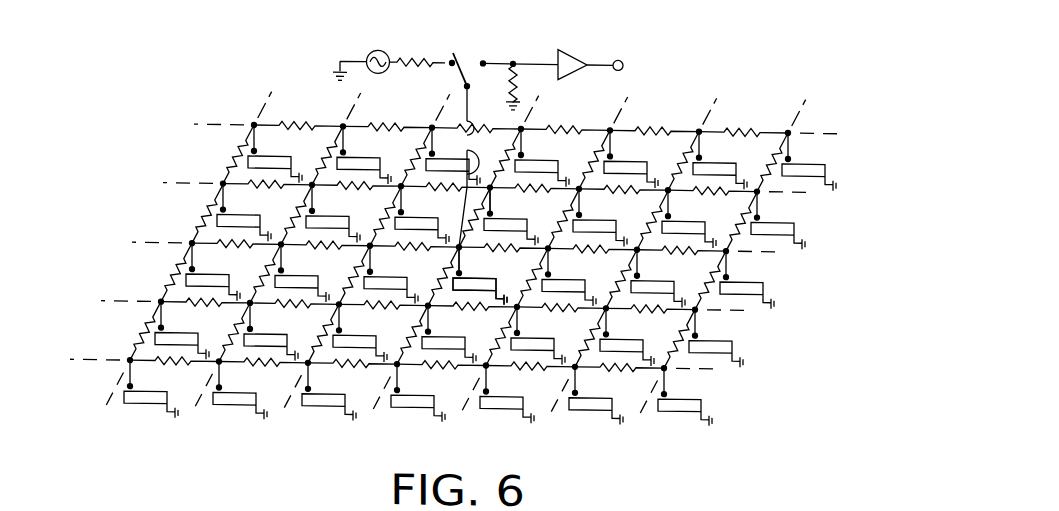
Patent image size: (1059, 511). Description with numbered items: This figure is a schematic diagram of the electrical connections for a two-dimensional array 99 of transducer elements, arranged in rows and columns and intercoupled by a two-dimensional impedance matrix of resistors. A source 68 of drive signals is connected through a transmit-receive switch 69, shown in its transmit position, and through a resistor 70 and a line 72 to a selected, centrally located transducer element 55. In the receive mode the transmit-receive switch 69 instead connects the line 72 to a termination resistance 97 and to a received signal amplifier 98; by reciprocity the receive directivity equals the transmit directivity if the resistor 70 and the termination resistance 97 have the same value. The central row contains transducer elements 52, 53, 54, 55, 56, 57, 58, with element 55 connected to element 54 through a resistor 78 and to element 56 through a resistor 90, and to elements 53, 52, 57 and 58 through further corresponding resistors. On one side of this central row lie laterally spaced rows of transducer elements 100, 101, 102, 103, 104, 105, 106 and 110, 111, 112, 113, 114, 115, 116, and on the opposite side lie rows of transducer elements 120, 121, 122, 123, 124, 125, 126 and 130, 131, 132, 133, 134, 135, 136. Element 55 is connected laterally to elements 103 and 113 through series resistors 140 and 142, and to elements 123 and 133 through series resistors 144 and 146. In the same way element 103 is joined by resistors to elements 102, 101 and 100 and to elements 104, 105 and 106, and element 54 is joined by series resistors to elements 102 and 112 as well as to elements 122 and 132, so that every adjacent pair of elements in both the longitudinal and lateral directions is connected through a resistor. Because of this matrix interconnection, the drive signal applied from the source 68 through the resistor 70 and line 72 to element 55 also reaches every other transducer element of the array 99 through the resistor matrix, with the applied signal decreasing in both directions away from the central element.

The transducer element 52 is at (222, 276).
The transducer element 53 is at (304, 276).
The transducer element 54 is at (372, 276).
The transducer element 55 is at (487, 282).
The transducer element 56 is at (551, 275).
The transducer element 57 is at (660, 276).
The transducer element 58 is at (765, 277).
The source of drive signals 68 is at (378, 48).
The transmit-receive switch 69 is at (468, 57).
The resistor 70 is at (411, 50).
The line 72 is at (470, 101).
The resistor 78 is at (409, 256).
The resistor 90 is at (497, 256).
The termination resistance 97 is at (518, 83).
The received signal amplifier 98 is at (576, 49).
The two-dimensional array 99 is at (833, 275).
The transducer element 100 is at (190, 335).
The transducer element 101 is at (272, 334).
The transducer element 102 is at (373, 333).
The transducer element 103 is at (460, 334).
The transducer element 104 is at (540, 334).
The transducer element 105 is at (632, 334).
The transducer element 106 is at (730, 334).
The transducer element 110 is at (163, 394).
The transducer element 111 is at (254, 394).
The transducer element 112 is at (342, 395).
The transducer element 113 is at (427, 395).
The transducer element 114 is at (507, 395).
The transducer element 115 is at (594, 395).
The transducer element 116 is at (703, 390).
The transducer element 120 is at (240, 215).
The transducer element 121 is at (326, 214).
The transducer element 122 is at (412, 215).
The transducer element 123 is at (524, 216).
The transducer element 124 is at (589, 215).
The transducer element 125 is at (687, 216).
The transducer element 126 is at (796, 215).
The transducer element 130 is at (272, 156).
The transducer element 131 is at (365, 156).
The transducer element 132 is at (445, 151).
The transducer element 133 is at (537, 156).
The transducer element 134 is at (630, 156).
The transducer element 135 is at (720, 156).
The transducer element 136 is at (812, 157).
The series resistor 140 is at (460, 272).
The series resistor 142 is at (413, 324).
The series resistor 144 is at (491, 213).
The series resistor 146 is at (472, 146).